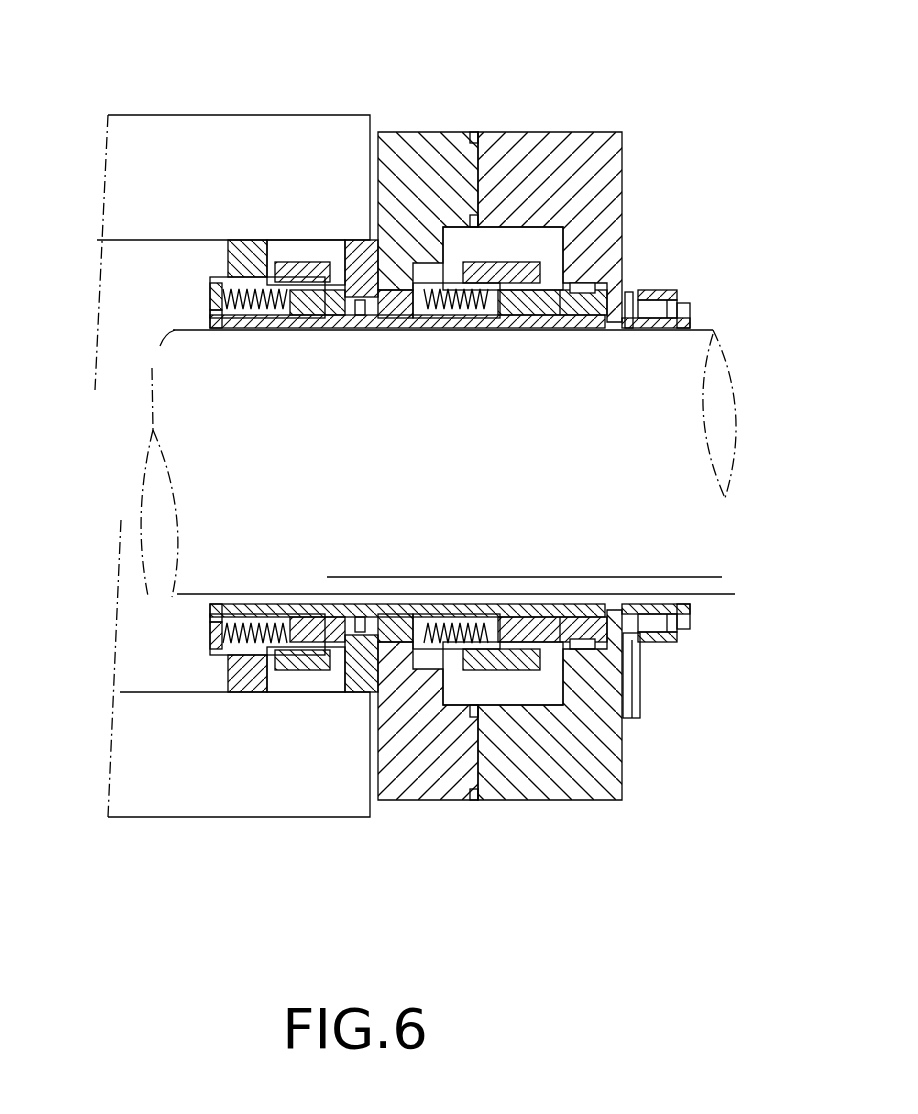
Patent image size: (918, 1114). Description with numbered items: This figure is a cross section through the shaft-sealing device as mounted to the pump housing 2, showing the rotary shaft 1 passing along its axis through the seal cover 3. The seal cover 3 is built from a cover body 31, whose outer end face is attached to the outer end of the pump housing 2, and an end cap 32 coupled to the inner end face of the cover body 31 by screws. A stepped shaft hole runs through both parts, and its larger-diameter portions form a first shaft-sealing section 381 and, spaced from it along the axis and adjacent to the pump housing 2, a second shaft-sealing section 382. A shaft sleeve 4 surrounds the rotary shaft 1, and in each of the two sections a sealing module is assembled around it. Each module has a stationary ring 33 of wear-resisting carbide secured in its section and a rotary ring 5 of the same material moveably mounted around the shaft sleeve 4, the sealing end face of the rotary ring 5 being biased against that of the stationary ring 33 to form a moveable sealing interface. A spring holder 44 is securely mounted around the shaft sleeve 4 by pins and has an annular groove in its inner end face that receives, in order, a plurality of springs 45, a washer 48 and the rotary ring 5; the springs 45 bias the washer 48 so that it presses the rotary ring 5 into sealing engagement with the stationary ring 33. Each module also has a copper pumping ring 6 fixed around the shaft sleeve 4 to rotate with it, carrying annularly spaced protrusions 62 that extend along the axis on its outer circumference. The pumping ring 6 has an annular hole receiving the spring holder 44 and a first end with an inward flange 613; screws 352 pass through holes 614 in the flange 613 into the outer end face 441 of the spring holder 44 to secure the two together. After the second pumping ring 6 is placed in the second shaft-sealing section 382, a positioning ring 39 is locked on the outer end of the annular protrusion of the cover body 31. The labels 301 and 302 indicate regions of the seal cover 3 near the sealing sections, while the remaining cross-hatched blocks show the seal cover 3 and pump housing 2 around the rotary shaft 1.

The rotary shaft 1 is at (668, 434).
The pump housing 2 is at (233, 805).
The seal cover 3 is at (511, 166).
The cover body 31 is at (443, 140).
The end cap 32 is at (584, 140).
The stationary ring 33 is at (378, 300).
The positioning ring 39 is at (245, 245).
The shaft sleeve 4 is at (597, 334).
The spring holder 44 is at (253, 652).
The outer end face 441 is at (217, 653).
The springs 45 is at (213, 625).
The washer 48 is at (240, 243).
The rotary ring 5 is at (333, 298).
The pumping ring 6 is at (213, 281).
The protrusions 62 is at (295, 262).
The first groove 301 is at (484, 668).
The second groove 302 is at (311, 694).
The screws 352 is at (215, 297).
The first shaft-sealing section 381 is at (508, 233).
The second shaft-sealing section 382 is at (314, 245).
The flange 613 is at (215, 331).
The holes 614 is at (213, 649).